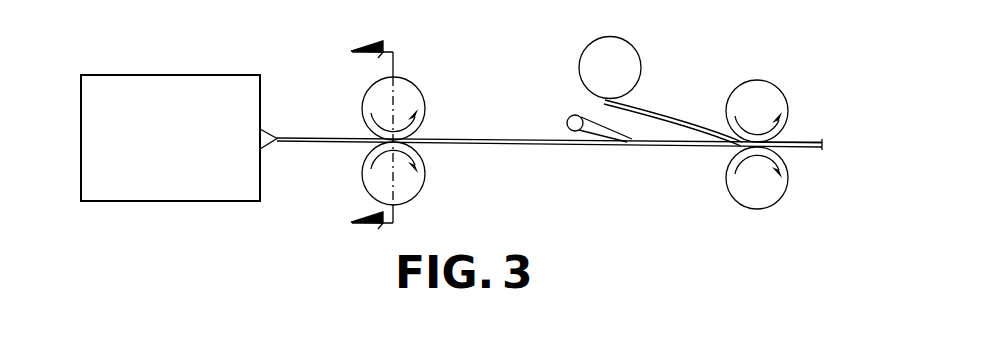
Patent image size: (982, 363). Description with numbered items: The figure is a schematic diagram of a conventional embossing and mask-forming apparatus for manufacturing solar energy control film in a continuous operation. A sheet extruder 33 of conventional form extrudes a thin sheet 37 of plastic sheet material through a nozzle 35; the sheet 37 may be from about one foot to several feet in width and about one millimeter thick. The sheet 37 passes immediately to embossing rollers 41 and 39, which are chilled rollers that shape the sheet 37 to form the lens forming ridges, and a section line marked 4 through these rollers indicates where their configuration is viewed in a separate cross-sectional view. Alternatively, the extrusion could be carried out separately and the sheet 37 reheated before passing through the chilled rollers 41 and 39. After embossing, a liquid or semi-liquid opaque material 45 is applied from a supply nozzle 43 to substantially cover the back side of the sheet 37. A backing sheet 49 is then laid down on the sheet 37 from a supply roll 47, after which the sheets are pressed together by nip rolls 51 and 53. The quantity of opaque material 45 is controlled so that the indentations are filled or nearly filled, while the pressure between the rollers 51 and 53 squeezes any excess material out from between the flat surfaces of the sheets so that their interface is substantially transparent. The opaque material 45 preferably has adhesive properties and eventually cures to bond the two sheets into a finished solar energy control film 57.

The sheet extruder 33 is at (145, 75).
The nozzle 35 is at (265, 130).
The sheet 37 is at (292, 143).
The section line 4- 4 is at (359, 141).
The embossing roller 39 is at (427, 178).
The embossing roller 41 is at (425, 102).
The supply nozzle 43 is at (567, 120).
The opaque material 45 is at (609, 138).
The supply roll 47 is at (641, 58).
The backing sheet 49 is at (647, 110).
The nip roll 51 is at (753, 80).
The nip roll 53 is at (788, 173).
The solar energy control film 57 is at (792, 140).